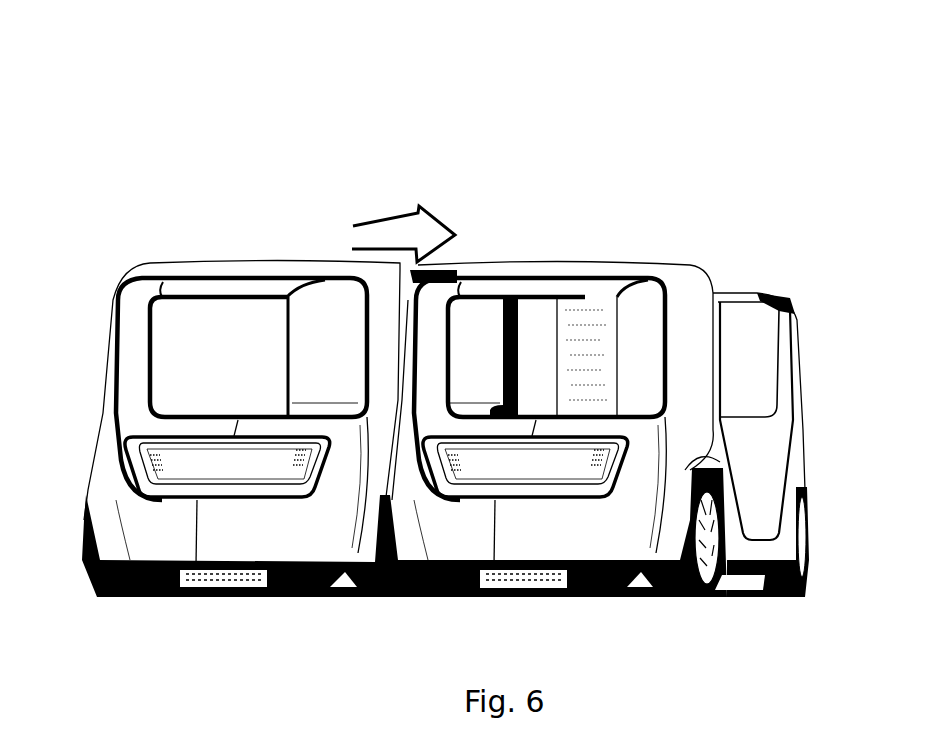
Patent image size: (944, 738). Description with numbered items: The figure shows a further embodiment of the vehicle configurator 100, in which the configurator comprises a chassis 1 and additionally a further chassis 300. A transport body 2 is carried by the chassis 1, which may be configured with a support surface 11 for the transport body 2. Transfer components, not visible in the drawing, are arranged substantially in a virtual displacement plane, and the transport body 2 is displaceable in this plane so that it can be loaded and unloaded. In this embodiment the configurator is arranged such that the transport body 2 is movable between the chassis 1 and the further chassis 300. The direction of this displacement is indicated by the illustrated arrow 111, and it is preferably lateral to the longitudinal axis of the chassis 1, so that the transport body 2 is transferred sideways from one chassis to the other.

The vehicle configurator 100 is at (258, 62).
The further chassis 300 is at (147, 270).
The transport body 2 is at (345, 340).
The arrow 111 is at (385, 210).
The chassis 1 is at (678, 252).
The support surface 11 is at (767, 494).